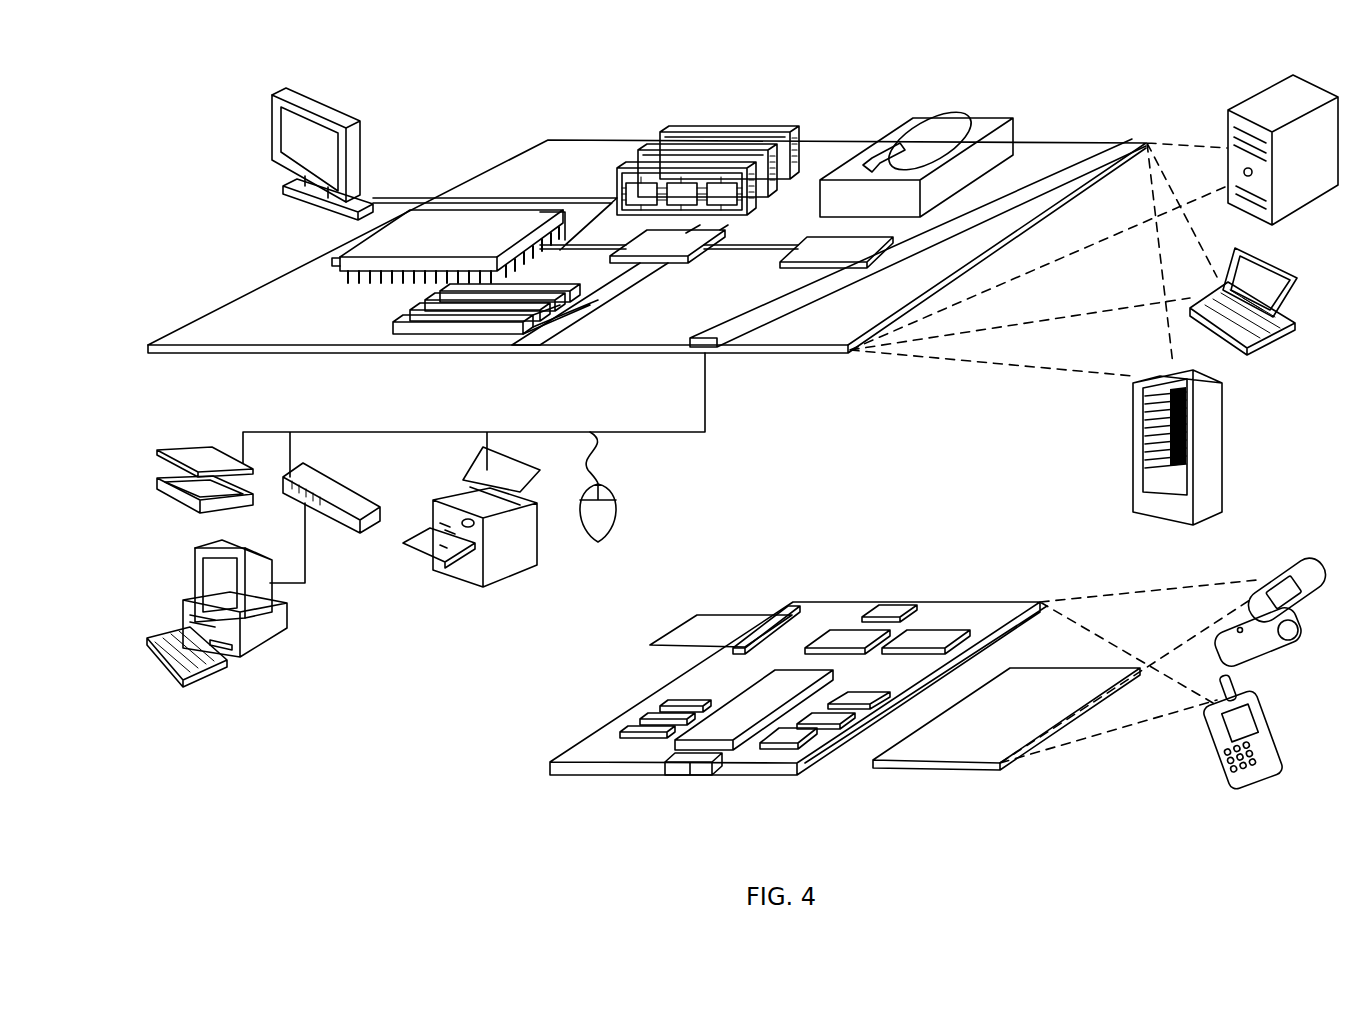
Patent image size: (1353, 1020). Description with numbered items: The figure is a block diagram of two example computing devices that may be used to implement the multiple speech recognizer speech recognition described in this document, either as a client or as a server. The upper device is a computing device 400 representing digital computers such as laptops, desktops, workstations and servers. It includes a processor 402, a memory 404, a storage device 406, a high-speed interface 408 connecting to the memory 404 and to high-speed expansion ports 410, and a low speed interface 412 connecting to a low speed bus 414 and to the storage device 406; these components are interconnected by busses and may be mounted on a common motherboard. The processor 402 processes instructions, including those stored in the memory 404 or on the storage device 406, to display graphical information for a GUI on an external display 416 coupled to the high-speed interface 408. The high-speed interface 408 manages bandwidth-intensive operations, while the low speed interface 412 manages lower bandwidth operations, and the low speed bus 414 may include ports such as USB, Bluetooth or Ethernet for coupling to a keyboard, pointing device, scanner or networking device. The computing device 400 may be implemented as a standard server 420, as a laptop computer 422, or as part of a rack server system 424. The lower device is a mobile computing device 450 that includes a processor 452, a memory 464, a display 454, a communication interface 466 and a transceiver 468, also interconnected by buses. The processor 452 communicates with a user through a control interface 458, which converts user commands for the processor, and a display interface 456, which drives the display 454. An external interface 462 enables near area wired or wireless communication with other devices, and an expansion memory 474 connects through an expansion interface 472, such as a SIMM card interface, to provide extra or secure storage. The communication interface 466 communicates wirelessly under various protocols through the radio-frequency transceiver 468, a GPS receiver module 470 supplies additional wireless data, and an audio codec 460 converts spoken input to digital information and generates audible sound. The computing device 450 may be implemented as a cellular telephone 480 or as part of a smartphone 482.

The computing device 400 is at (470, 116).
The processor 402 is at (340, 262).
The memory 404 is at (669, 130).
The storage device 406 is at (901, 114).
The high-speed interface 408 is at (603, 209).
The high-speed expansion ports 410 is at (423, 318).
The low speed interface 412 is at (818, 245).
The low speed bus 414 is at (720, 347).
The display 416 is at (275, 92).
The standard server 420 is at (1228, 128).
The laptop computer 422 is at (1290, 275).
The rack server system 424 is at (1133, 474).
The computing device 450 is at (527, 771).
The processor 452 is at (730, 728).
The display 454 is at (962, 750).
The display interface 456 is at (804, 749).
The control interface 458 is at (838, 725).
The audio codec 460 is at (857, 705).
The external interface 462 is at (690, 777).
The memory 464 is at (642, 722).
The communication interface 466 is at (847, 637).
The transceiver 468 is at (925, 637).
The GPS receiver module 470 is at (898, 603).
The expansion interface 472 is at (778, 612).
The expansion memory 474 is at (698, 615).
The cellular telephone 480 is at (1273, 553).
The smartphone 482 is at (1217, 733).